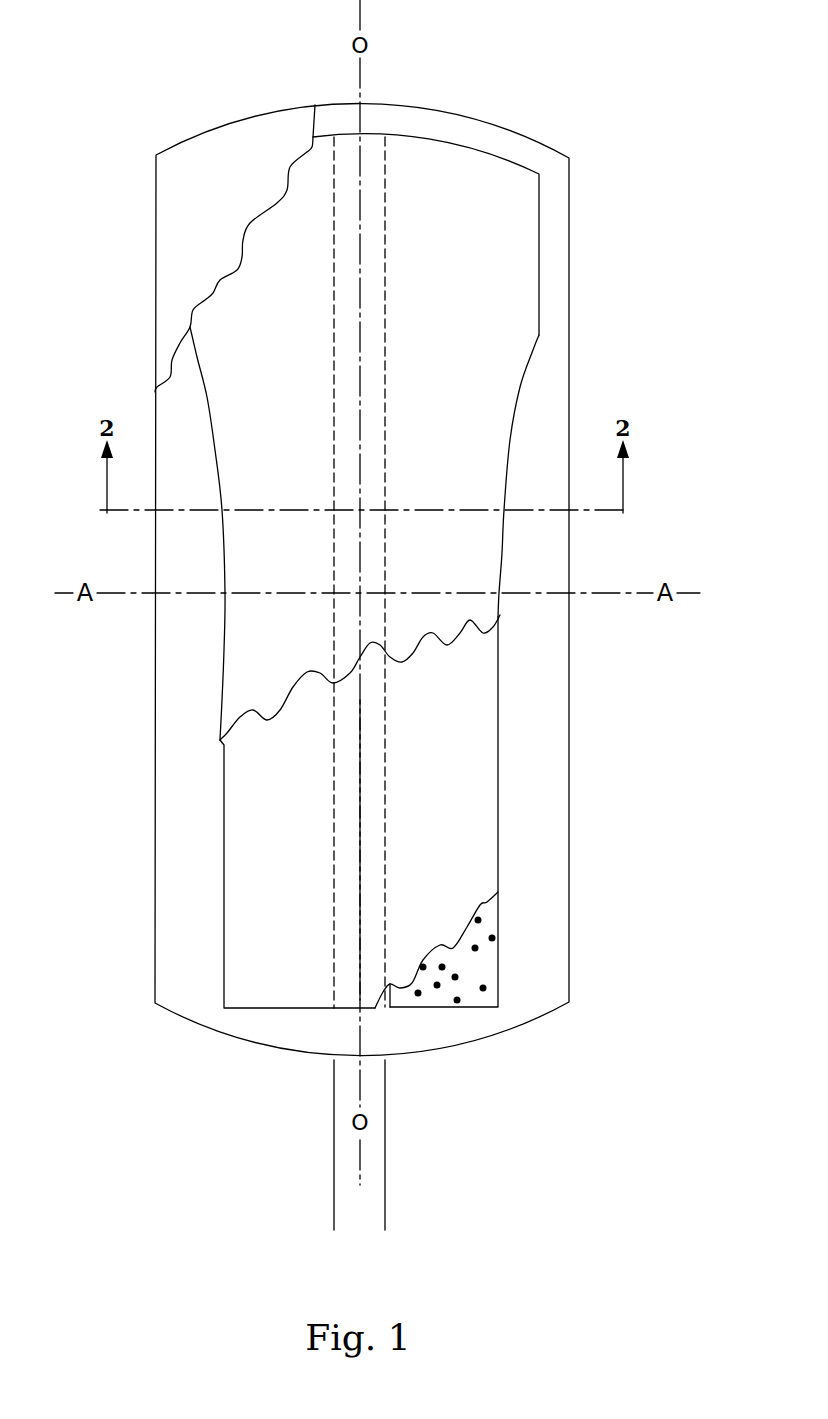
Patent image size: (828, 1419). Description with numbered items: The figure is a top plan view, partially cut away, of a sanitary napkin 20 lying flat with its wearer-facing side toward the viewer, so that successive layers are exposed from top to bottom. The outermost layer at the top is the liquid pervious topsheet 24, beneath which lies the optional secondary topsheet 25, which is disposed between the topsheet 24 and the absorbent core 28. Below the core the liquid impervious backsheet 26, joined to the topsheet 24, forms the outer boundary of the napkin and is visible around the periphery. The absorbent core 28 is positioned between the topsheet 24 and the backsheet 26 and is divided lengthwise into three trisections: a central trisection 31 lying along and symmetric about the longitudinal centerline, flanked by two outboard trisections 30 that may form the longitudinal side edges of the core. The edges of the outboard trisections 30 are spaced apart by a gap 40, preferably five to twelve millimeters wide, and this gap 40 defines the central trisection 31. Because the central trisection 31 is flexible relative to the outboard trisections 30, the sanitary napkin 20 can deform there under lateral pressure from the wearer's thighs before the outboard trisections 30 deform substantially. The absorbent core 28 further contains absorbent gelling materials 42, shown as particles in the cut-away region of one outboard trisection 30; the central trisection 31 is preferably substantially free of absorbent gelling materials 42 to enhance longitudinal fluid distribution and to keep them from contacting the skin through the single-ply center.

The sanitary napkin 20 is at (554, 1120).
The liquid pervious topsheet 24 is at (231, 190).
The secondary topsheet 25 is at (283, 420).
The liquid impervious backsheet 26 is at (211, 970).
The absorbent core 28 is at (291, 886).
The outboard trisections 30 is at (330, 786).
The central trisection 31 is at (381, 833).
The gap 40 is at (275, 1208).
The absorbent gelling materials 42 is at (418, 996).